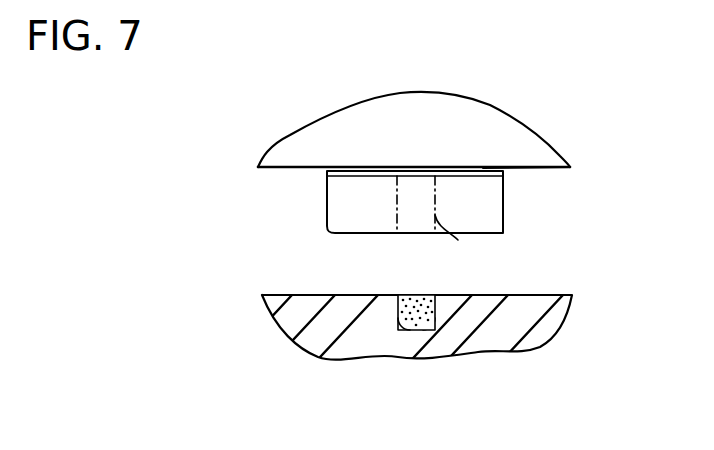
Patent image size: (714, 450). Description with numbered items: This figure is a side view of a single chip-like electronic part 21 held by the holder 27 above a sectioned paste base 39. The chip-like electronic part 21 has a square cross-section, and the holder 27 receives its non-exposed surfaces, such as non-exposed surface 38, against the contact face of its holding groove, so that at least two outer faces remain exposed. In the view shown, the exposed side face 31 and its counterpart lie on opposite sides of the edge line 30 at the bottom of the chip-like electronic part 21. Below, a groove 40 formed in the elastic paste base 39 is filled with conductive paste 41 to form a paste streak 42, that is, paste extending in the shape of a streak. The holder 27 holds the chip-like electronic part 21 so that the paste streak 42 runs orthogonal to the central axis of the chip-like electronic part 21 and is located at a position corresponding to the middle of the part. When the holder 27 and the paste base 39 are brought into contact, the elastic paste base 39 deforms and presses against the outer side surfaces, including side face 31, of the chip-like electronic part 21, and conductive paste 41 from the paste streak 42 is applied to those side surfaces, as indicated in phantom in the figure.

The holder 27 is at (290, 138).
The non-exposed surface 38 is at (483, 168).
The chip-like electronic part 21 is at (325, 200).
The side face 31 is at (485, 207).
The edge line 30 is at (329, 234).
The conductive paste 41 is at (437, 218).
The paste base 39 is at (574, 313).
The paste streak 42 is at (403, 291).
The groove 40 is at (409, 331).